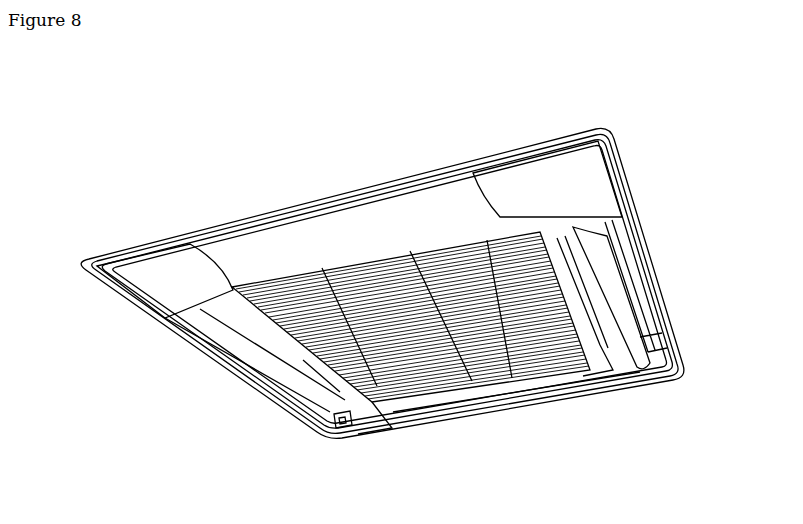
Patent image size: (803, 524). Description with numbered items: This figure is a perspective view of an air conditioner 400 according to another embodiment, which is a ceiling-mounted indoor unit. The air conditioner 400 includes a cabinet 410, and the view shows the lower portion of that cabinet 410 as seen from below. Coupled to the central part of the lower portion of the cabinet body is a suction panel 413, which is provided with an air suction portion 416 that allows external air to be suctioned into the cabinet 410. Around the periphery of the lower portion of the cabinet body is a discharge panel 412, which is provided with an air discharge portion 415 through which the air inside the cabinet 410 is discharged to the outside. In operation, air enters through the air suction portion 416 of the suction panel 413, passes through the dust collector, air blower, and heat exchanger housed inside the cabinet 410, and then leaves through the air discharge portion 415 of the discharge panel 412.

The air conditioner 400 is at (216, 147).
The cabinet 410 is at (163, 280).
The discharge panel 412 is at (607, 335).
The suction panel 413 is at (375, 383).
The air discharge portion 415 is at (629, 271).
The air suction portion 416 is at (463, 380).